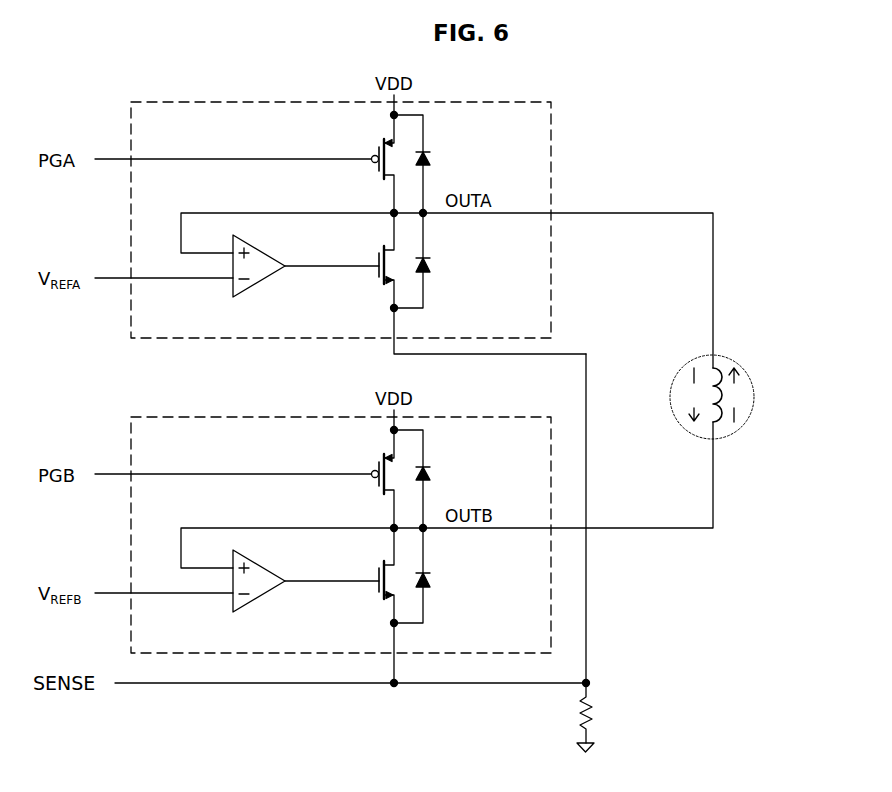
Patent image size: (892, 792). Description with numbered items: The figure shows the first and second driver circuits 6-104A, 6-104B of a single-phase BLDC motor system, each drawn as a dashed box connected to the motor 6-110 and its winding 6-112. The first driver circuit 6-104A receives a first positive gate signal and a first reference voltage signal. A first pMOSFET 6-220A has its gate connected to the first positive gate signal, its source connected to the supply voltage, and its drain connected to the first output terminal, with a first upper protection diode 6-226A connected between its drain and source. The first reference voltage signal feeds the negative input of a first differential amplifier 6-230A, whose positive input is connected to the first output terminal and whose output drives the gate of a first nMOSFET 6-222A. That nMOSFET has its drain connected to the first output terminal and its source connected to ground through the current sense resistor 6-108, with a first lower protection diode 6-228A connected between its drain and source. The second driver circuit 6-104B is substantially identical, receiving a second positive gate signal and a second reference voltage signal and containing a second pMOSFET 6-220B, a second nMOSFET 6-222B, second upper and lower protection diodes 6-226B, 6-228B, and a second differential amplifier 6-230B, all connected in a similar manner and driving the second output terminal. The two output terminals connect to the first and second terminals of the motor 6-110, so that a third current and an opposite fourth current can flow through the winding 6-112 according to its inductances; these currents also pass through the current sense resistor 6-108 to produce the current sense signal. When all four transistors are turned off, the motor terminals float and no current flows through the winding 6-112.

The first driver circuit 6-104A is at (216, 101).
The second driver circuit 6-104B is at (216, 416).
The first pMOSFET 6-220A is at (378, 150).
The second pMOSFET 6-220B is at (378, 465).
The first nMOSFET 6-222A is at (379, 250).
The second nMOSFET 6-222B is at (379, 565).
The first upper protection diode 6-226A is at (434, 155).
The second upper protection diode 6-226B is at (434, 470).
The first lower protection diode 6-228A is at (434, 265).
The second lower protection diode 6-228B is at (434, 580).
The first differential amplifier 6-230A is at (262, 283).
The second differential amplifier 6-230B is at (262, 598).
The current sense resistor 6-108 is at (593, 705).
The motor 6-110 is at (744, 366).
The winding 6-112 is at (718, 417).